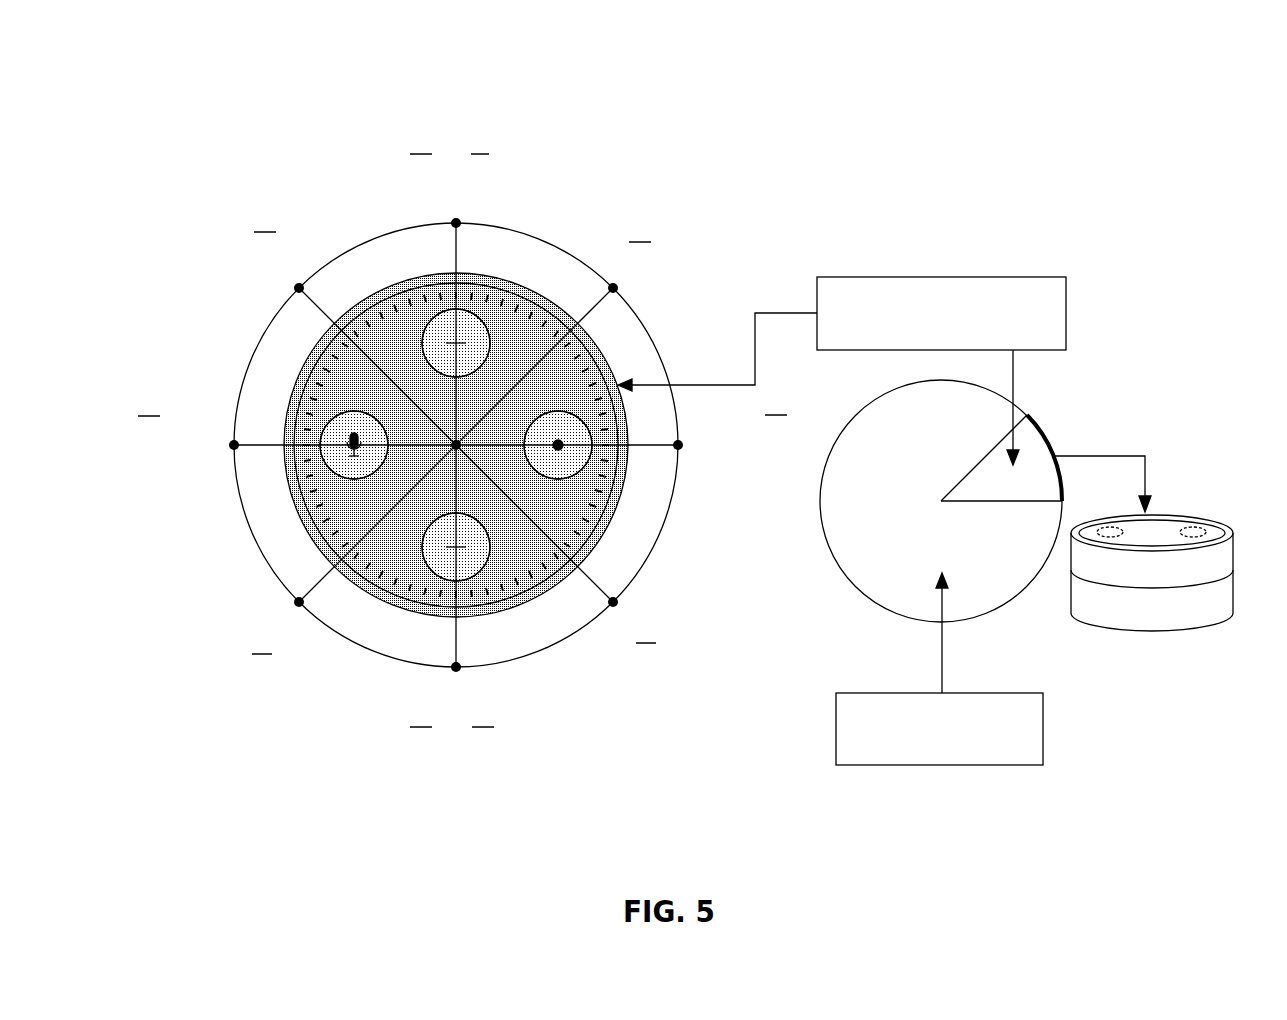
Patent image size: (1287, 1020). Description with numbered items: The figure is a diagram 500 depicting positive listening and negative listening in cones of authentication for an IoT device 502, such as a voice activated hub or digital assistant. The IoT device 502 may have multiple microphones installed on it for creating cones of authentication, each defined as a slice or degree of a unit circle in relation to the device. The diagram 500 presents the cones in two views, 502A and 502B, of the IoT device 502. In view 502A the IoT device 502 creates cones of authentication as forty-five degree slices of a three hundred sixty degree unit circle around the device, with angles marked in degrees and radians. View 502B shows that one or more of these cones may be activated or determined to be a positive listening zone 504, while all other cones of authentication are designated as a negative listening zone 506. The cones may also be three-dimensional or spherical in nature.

The diagram 500 is at (703, 29).
The IoT device 502 is at (510, 282).
The view of the IoT device 502A is at (483, 814).
The view of the IoT device 502B is at (1062, 834).
The positive listening zone 504 is at (969, 276).
The negative listening zone 506 is at (975, 692).